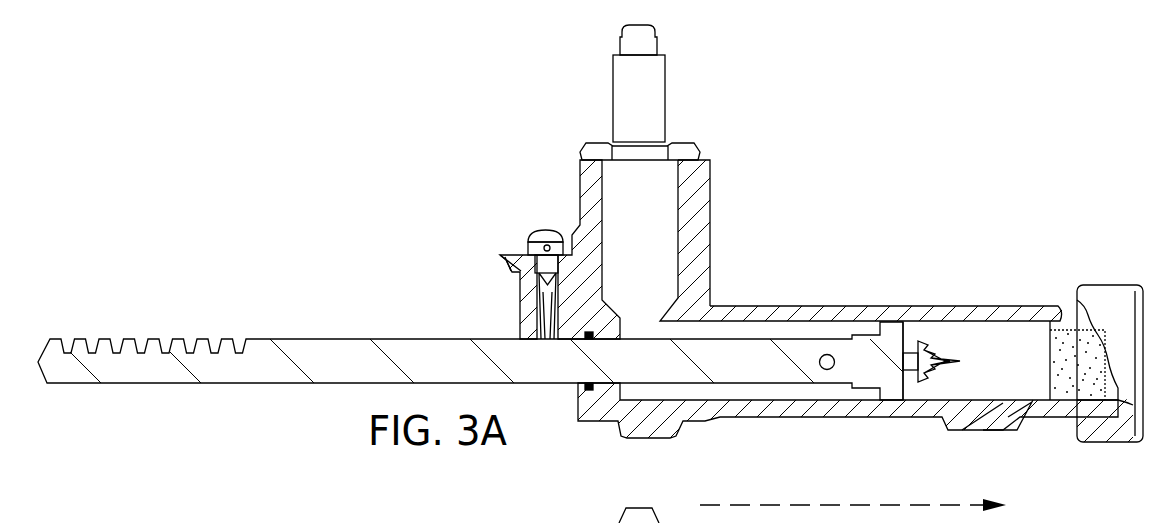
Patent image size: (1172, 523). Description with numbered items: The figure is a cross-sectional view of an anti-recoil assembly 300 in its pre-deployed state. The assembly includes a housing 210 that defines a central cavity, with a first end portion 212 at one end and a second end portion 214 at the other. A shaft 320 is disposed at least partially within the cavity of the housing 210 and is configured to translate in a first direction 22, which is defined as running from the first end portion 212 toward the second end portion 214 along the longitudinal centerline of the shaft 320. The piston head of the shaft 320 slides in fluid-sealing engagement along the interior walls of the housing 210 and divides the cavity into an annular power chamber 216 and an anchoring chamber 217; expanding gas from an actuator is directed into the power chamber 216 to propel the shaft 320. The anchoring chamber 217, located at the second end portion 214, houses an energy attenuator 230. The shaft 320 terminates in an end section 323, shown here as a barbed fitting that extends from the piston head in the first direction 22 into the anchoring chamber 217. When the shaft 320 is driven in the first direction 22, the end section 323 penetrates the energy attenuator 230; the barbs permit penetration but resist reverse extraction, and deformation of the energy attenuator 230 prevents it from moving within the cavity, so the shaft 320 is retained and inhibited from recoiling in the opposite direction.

The anti-recoil assembly 300 is at (262, 158).
The shaft 320 is at (345, 366).
The housing 210 is at (873, 325).
The annular power chamber 216 is at (759, 328).
The first end portion 212 is at (650, 440).
The anchoring chamber 217 is at (987, 340).
The end section 323 is at (942, 340).
The energy attenuator 230 is at (1080, 335).
The second end portion 214 is at (1076, 427).
The first direction 22 is at (782, 505).